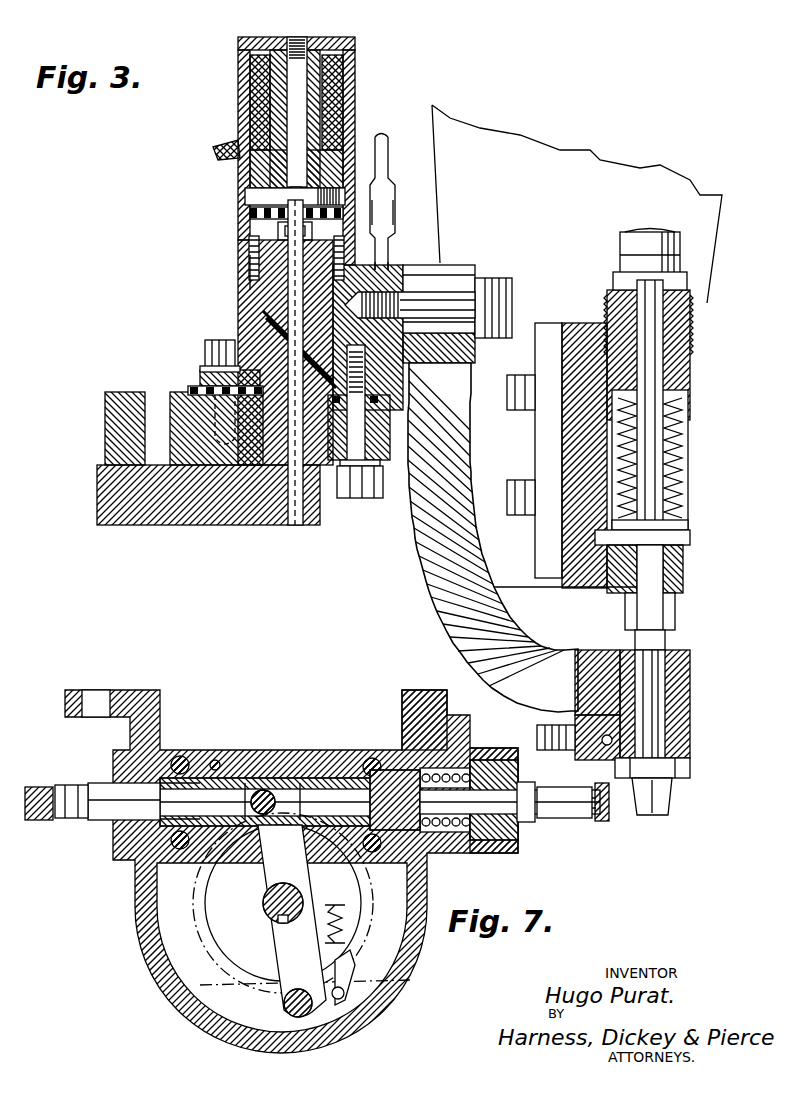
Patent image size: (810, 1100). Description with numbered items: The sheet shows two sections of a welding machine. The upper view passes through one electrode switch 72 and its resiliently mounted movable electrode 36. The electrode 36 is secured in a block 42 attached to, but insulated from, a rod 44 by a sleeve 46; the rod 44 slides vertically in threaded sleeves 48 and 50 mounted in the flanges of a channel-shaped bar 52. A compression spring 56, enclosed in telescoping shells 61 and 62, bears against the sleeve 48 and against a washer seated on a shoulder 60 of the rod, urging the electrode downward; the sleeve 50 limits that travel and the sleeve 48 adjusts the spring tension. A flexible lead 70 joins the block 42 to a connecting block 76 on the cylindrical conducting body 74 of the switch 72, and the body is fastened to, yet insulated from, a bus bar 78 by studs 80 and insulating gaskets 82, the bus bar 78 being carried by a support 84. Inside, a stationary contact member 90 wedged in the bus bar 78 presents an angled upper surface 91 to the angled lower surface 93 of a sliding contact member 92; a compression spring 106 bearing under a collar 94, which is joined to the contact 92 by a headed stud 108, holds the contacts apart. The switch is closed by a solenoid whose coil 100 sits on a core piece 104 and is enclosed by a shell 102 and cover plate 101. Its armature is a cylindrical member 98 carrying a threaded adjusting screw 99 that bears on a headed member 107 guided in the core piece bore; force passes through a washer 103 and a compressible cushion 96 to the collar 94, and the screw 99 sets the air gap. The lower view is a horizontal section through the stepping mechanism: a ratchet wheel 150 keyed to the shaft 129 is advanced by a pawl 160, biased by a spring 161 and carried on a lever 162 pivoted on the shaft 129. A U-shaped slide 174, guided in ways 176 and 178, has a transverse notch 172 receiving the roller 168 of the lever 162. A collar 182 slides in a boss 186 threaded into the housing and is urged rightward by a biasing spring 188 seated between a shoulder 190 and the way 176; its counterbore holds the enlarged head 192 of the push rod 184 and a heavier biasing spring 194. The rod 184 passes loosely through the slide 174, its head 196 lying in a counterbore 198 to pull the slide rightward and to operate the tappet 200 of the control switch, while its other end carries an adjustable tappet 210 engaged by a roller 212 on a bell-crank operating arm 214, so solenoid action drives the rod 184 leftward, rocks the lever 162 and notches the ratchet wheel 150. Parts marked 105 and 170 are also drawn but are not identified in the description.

In FIG. 3, the cover plate 101 is at (333, 37).
In FIG. 3, the threaded adjusting screw 99 is at (356, 52).
In FIG. 3, the cylindrical armature member 98 is at (318, 100).
In FIG. 3, the shell 102 is at (258, 68).
In FIG. 3, the core piece 104 is at (258, 172).
In FIG. 3, the coil 100 is at (300, 85).
In FIG. 3, the compressible cushion 96 is at (255, 200).
In FIG. 3, the collar 94 is at (248, 220).
In FIG. 3, the headed stud 108 is at (277, 232).
In FIG. 3, the electrode switch 72 is at (230, 304).
In FIG. 3, the cylindrical body 74 is at (245, 265).
In FIG. 3, the contact member 92 is at (248, 280).
In FIG. 3, the angled lower surface 93 is at (266, 314).
In FIG. 3, the support 84 is at (234, 515).
In FIG. 3, the angled upper surface 91 is at (292, 333).
In FIG. 3, the bus bar 78 is at (120, 400).
In FIG. 3, the stationary contact member 90 is at (272, 428).
In FIG. 3, the insulating gasket 82 is at (195, 388).
In FIG. 3, the stud 80 is at (215, 345).
In FIG. 7, the stud 80 is at (185, 848).
In FIG. 3, the connecting block 76 is at (432, 270).
In FIG. 3, the set screw 105 is at (355, 122).
In FIG. 3, the headed member 107 is at (360, 150).
In FIG. 3, the washer 103 is at (350, 205).
In FIG. 3, the compression spring 106 is at (350, 262).
In FIG. 3, the flexible lead 70 is at (492, 630).
In FIG. 3, the channel-shaped bar 52 is at (570, 440).
In FIG. 3, the threaded sleeve 48 is at (685, 345).
In FIG. 3, the telescoping shell 61 is at (690, 400).
In FIG. 3, the compression spring 56 is at (675, 442).
In FIG. 3, the rod 44 is at (655, 458).
In FIG. 3, the telescoping shell 62 is at (672, 487).
In FIG. 3, the threaded sleeve 50 is at (690, 548).
In FIG. 3, the shoulder 60 is at (622, 545).
In FIG. 3, the sleeve 46 is at (668, 635).
In FIG. 3, the block 42 is at (692, 707).
In FIG. 3, the movable electrode 36 is at (668, 795).
In FIG. 7, the way 178 is at (355, 845).
In FIG. 7, the way 176 is at (312, 760).
In FIG. 7, the transverse notch 172 is at (248, 790).
In FIG. 7, the slide 174 is at (222, 782).
In FIG. 7, the counterbore 198 is at (178, 782).
In FIG. 7, the biasing spring 188 is at (440, 768).
In FIG. 7, the boss 186 is at (478, 760).
In FIG. 7, the shoulder 190 is at (490, 780).
In FIG. 7, the collar 182 is at (392, 785).
In FIG. 7, the push rod 184 is at (340, 798).
In FIG. 7, the biasing spring 194 is at (470, 812).
In FIG. 7, the enlarged head 192 is at (522, 792).
In FIG. 7, the head 196 is at (124, 801).
In FIG. 7, the tappet 200 is at (100, 788).
In FIG. 7, the tappet 210 is at (550, 820).
In FIG. 7, the roller 212 is at (605, 800).
In FIG. 7, the operating arm 214 is at (600, 820).
In FIG. 7, the disc 170 is at (230, 878).
In FIG. 7, the ratchet wheel 150 is at (255, 975).
In FIG. 7, the roller 168 is at (285, 835).
In FIG. 7, the shaft 129 is at (283, 883).
In FIG. 7, the pawl 160 is at (355, 985).
In FIG. 7, the spring 161 is at (350, 920).
In FIG. 7, the lever 162 is at (350, 945).